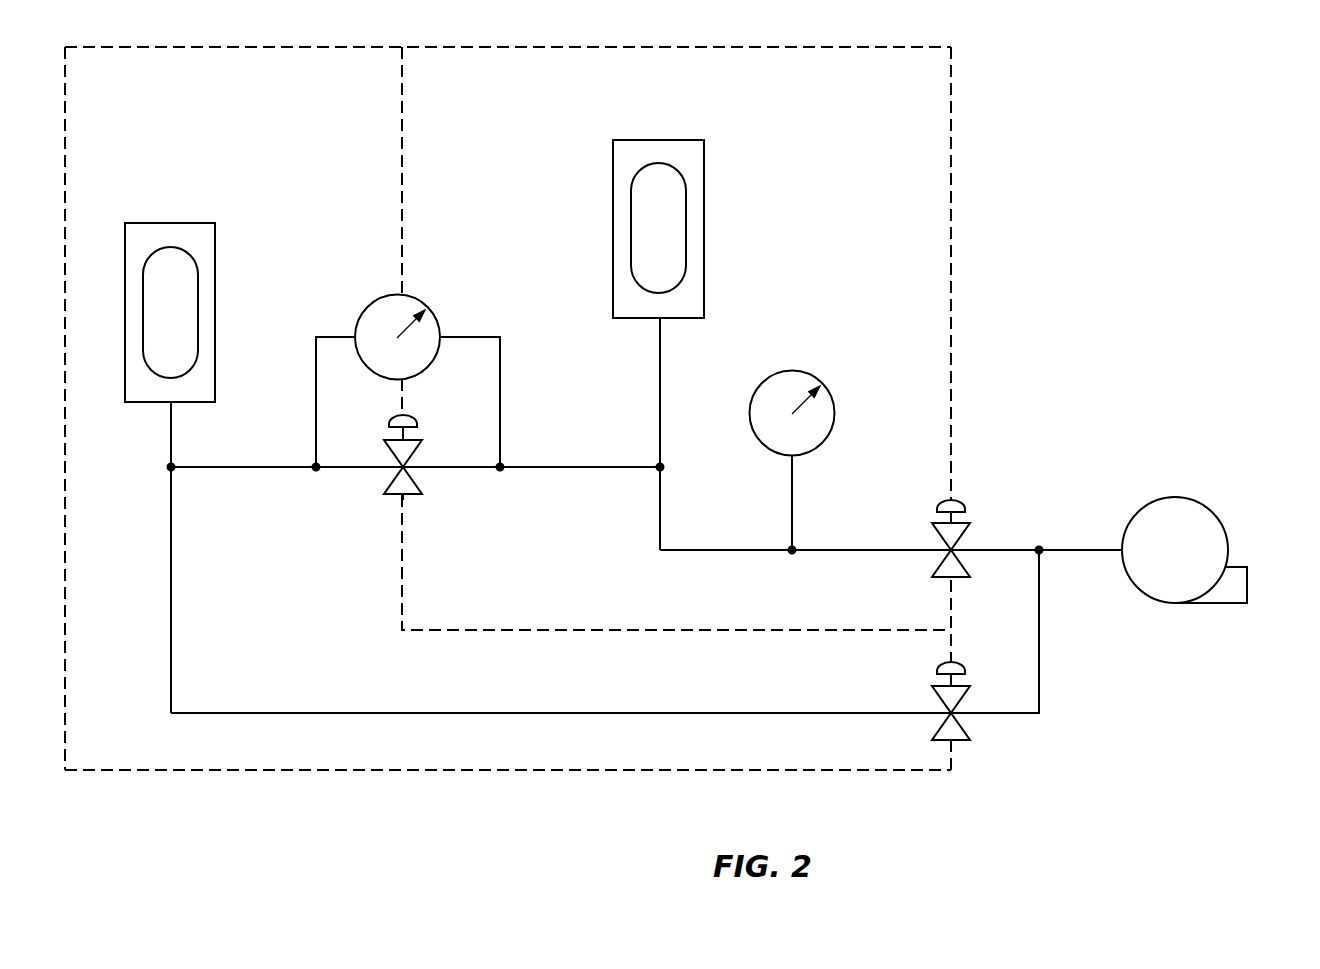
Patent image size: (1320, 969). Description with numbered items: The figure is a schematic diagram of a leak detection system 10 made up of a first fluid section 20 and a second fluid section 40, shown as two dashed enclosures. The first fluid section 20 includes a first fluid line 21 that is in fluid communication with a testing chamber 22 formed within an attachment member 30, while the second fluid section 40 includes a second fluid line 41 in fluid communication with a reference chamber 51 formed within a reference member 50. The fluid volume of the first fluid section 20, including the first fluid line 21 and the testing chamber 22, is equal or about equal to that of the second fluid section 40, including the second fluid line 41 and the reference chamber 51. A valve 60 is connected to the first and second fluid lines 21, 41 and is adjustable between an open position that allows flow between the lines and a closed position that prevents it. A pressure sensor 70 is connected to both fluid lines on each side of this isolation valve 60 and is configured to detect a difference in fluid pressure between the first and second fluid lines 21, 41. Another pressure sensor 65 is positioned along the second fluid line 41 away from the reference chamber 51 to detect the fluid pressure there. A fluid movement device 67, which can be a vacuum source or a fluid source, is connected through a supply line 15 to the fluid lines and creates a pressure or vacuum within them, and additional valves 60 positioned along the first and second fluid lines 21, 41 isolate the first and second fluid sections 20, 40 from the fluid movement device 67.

The leak detection system 10 is at (1007, 183).
The supply line 15 is at (1061, 549).
The first fluid section 20 is at (208, 773).
The first fluid line 21 is at (365, 713).
The testing chamber 22 is at (168, 279).
The attachment member 30 is at (197, 292).
The second fluid section 40 is at (952, 345).
The second fluid line 41 is at (844, 550).
The reference member 50 is at (695, 229).
The reference chamber 51 is at (656, 196).
The valve 60 is at (420, 482).
The pressure sensor 65 is at (832, 392).
The fluid movement device 67 is at (1198, 535).
The pressure sensor 70 is at (438, 323).